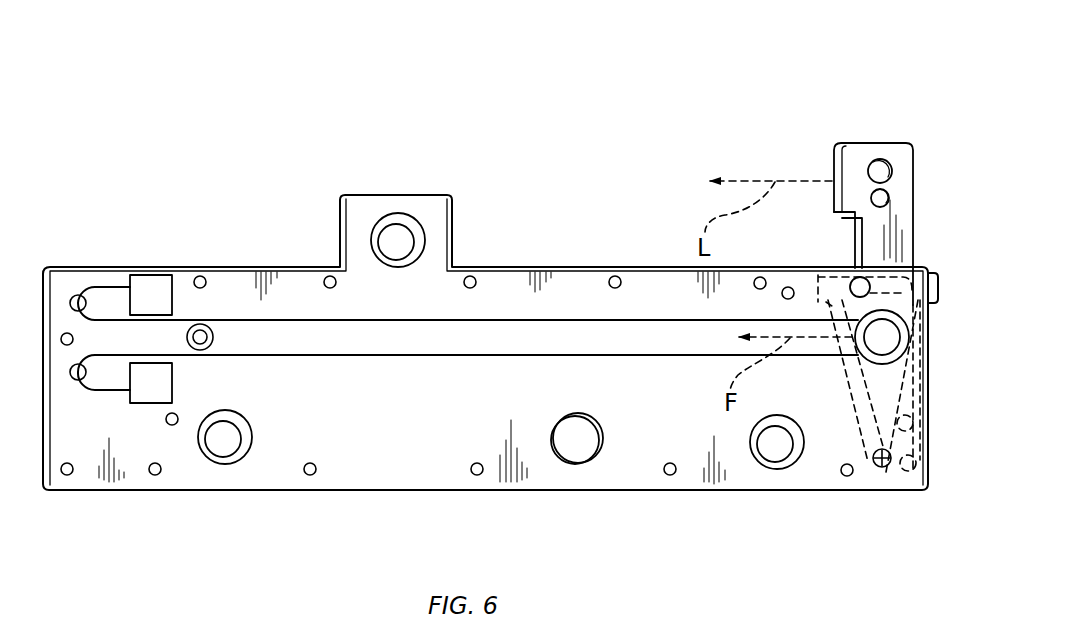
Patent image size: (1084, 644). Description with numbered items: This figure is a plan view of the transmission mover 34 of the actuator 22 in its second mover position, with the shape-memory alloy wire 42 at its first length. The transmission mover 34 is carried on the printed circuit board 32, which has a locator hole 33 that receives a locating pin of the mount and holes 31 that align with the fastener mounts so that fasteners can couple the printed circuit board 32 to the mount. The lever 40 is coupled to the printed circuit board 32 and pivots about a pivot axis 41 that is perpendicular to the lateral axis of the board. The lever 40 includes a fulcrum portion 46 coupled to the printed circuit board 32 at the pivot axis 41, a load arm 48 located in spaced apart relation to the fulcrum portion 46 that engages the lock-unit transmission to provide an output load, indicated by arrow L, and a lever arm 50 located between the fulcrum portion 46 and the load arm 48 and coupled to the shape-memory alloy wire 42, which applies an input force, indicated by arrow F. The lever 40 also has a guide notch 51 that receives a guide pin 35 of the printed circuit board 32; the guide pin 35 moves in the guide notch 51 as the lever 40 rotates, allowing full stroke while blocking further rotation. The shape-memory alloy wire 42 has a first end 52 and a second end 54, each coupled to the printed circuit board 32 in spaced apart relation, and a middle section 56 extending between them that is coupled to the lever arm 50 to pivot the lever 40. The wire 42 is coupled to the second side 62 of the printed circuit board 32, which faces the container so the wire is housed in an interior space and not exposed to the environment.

The actuator 22 is at (99, 118).
The holes 31 is at (413, 224).
The printed circuit board 32 is at (311, 494).
The locator hole 33 is at (565, 443).
The transmission mover 34 is at (747, 164).
The guide pin 35 is at (842, 281).
The lever 40 is at (854, 171).
The pivot axis 41 is at (884, 468).
The shape-memory alloy wire 42 is at (190, 193).
The fulcrum portion 46 is at (858, 431).
The load arm 48 is at (855, 316).
The lever arm 50 is at (873, 139).
The guide notch 51 is at (904, 262).
The first end 52 is at (159, 268).
The second end 54 is at (174, 383).
The middle section 56 is at (595, 316).
The second side 62 is at (362, 447).